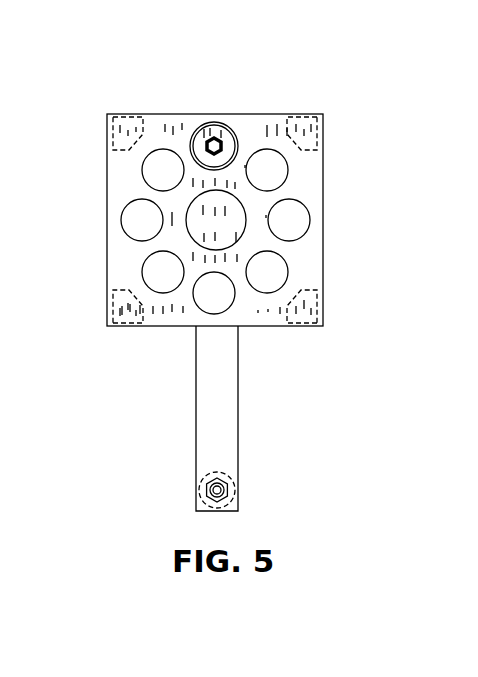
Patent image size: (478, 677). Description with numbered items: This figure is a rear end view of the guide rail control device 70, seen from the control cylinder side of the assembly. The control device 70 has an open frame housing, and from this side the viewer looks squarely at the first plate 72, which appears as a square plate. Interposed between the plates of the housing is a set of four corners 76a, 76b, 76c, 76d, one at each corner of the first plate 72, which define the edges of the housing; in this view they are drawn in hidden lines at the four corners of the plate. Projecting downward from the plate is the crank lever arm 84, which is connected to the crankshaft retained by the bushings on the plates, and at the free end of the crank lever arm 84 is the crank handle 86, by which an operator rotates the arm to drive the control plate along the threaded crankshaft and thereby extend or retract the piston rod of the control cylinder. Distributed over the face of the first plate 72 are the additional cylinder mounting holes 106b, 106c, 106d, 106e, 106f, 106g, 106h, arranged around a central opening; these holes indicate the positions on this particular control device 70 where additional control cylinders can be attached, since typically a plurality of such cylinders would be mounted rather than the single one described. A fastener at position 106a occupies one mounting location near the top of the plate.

The guide rail control device 70 is at (392, 83).
The first plate 72 is at (190, 113).
The corner 76a is at (322, 140).
The corner 76b is at (307, 327).
The corner 76c is at (120, 327).
The corner 76d is at (128, 113).
The crank lever arm 84 is at (238, 473).
The crank handle 86 is at (225, 502).
The fastener bolt 106a is at (212, 146).
The cylinder mounting hole 106b is at (162, 180).
The cylinder mounting hole 106c is at (135, 225).
The cylinder mounting hole 106d is at (155, 273).
The cylinder mounting hole 106e is at (216, 298).
The cylinder mounting hole 106f is at (273, 270).
The cylinder mounting hole 106g is at (293, 212).
The cylinder mounting hole 106h is at (265, 162).